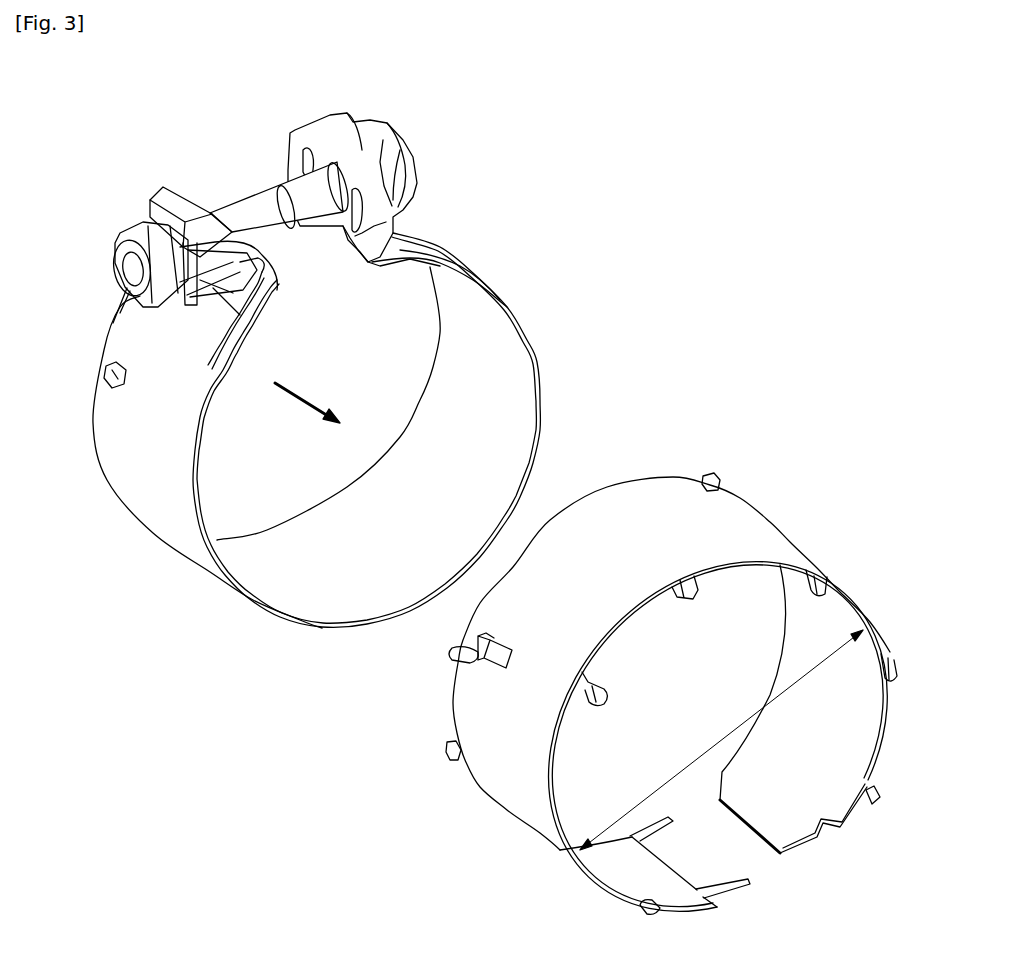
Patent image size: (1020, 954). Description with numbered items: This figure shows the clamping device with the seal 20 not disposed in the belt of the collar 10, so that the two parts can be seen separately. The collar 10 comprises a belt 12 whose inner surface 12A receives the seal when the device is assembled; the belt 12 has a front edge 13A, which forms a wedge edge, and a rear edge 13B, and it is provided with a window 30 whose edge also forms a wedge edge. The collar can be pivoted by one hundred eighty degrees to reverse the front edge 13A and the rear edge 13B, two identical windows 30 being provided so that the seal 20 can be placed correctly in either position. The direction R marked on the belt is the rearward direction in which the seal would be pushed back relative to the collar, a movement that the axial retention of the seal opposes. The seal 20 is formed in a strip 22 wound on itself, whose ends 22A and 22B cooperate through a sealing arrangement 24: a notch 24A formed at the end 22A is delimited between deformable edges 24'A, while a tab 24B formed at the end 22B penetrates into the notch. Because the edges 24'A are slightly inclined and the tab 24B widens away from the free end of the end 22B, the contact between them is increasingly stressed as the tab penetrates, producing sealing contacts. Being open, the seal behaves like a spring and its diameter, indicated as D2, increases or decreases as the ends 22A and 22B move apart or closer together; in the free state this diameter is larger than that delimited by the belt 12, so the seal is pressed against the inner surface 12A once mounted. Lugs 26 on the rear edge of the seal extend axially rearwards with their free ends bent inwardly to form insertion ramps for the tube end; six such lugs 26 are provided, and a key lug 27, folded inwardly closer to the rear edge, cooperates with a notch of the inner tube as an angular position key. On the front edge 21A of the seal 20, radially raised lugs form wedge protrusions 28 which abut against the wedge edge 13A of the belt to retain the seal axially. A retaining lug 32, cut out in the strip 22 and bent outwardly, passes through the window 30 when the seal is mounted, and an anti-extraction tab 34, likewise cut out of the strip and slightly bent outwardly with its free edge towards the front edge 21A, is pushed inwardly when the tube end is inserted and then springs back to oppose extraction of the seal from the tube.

The collar 10 is at (324, 370).
The belt 12 is at (324, 430).
The inner surface of the belt 12A is at (428, 527).
The front edge of the belt 13A is at (106, 338).
The rear edge of the belt 13B is at (543, 381).
The window 30 is at (106, 373).
The seal 20 is at (664, 690).
The front edge of the seal 21A is at (606, 492).
The strip 22 is at (693, 702).
The end of the strip 22A is at (680, 885).
The end of the strip 22B is at (812, 854).
The sealing arrangement 24 is at (766, 803).
The notch 24A is at (633, 849).
The deformable edges 24'A is at (690, 857).
The tab 24B is at (742, 809).
The lugs 26 is at (604, 686).
The key lug 27 is at (690, 600).
The wedge protrusions 28 is at (713, 472).
The retaining lug 32 is at (450, 655).
The anti-extraction tab 34 is at (503, 645).
The diameter of ring D2 is at (716, 745).
The rearward direction R is at (307, 398).